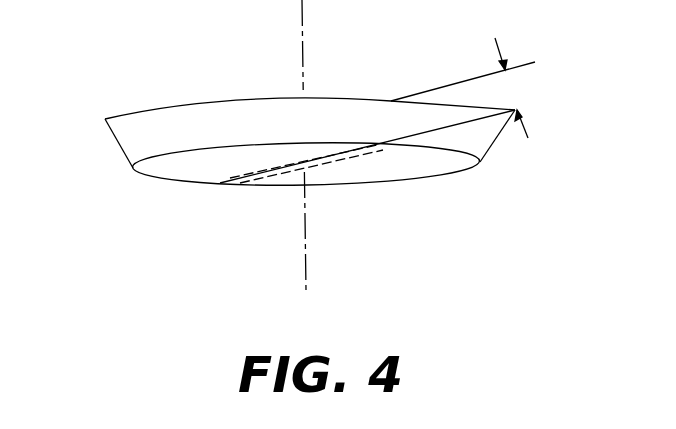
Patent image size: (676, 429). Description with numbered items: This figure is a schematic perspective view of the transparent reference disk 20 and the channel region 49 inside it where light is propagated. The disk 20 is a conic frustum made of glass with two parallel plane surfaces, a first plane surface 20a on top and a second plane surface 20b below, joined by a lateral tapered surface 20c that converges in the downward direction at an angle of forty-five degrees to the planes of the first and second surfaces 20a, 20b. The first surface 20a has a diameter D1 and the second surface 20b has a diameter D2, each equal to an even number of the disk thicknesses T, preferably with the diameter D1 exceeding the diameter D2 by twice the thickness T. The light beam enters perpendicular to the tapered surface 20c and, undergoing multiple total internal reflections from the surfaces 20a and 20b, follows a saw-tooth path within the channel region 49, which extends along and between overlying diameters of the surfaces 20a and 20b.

The transparent reference disk 20 is at (300, 121).
The first plane surface 20a is at (140, 110).
The second plane surface 20b is at (157, 180).
The lateral tapered surface 20c is at (486, 150).
The channel region 49 is at (221, 184).
The diameter of first surface D1 is at (374, 100).
The diameter of second surface D2 is at (320, 163).
The disk thickness T is at (511, 88).